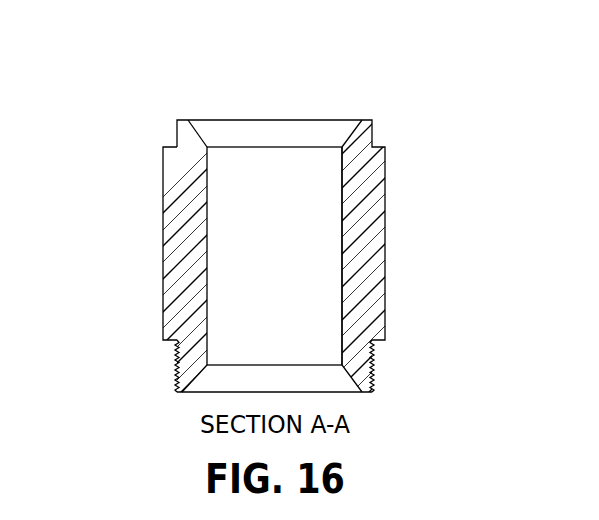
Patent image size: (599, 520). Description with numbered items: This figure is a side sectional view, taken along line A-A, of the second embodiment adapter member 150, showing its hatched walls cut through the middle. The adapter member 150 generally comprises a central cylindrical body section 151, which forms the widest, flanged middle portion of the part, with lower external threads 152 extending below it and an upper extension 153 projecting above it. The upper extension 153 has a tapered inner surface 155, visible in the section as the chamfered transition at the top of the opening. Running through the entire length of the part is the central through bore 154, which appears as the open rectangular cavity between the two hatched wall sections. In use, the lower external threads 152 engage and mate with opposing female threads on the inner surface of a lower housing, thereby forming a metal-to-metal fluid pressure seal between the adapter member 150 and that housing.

The second embodiment adapter member 150 is at (163, 175).
The central cylindrical body section 151 is at (365, 242).
The lower external threads 152 is at (175, 373).
The upper extension 153 is at (374, 128).
The central through bore 154 is at (259, 207).
The tapered inner surface 155 is at (205, 152).